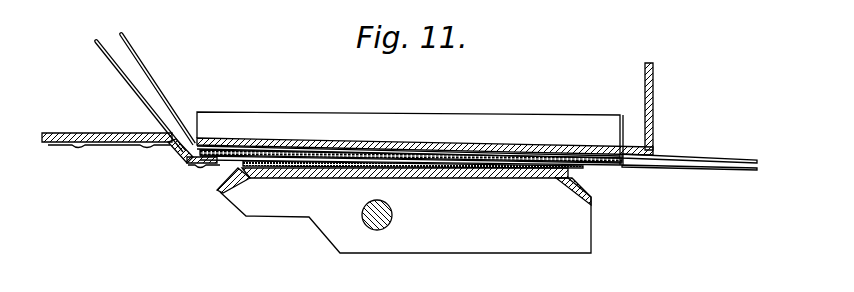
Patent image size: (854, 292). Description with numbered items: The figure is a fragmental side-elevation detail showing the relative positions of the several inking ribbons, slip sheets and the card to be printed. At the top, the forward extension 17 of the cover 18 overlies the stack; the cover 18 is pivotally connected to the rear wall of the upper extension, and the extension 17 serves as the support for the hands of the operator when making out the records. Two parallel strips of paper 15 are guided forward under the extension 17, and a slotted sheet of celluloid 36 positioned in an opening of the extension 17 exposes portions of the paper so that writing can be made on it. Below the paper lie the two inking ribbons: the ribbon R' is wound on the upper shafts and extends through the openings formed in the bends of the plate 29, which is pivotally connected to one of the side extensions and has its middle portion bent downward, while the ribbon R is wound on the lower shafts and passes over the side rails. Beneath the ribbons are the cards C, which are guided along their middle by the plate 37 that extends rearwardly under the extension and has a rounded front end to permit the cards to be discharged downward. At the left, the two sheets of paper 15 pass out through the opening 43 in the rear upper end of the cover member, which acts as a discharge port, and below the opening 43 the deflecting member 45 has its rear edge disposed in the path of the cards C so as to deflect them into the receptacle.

The strips of paper 15 is at (120, 62).
The opening 43 is at (170, 134).
The deflecting member 45 is at (188, 163).
The forward extension 17 is at (215, 138).
The cover 18 is at (651, 63).
The plate 29 is at (537, 111).
The sheet of celluloid 36 is at (292, 146).
The ribbon R' is at (411, 120).
The ribbon R is at (413, 128).
The cards C is at (447, 180).
The plate 37 is at (404, 196).